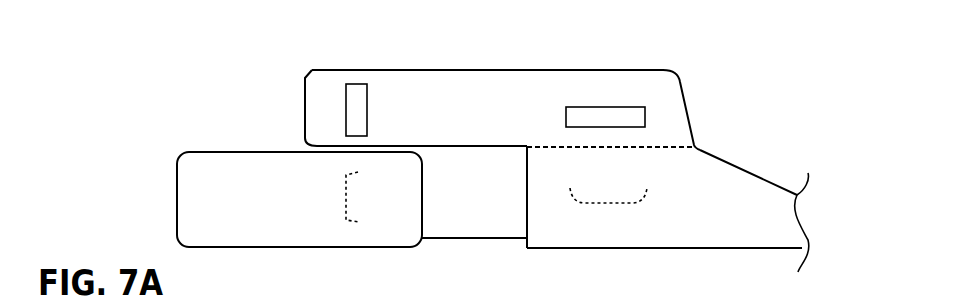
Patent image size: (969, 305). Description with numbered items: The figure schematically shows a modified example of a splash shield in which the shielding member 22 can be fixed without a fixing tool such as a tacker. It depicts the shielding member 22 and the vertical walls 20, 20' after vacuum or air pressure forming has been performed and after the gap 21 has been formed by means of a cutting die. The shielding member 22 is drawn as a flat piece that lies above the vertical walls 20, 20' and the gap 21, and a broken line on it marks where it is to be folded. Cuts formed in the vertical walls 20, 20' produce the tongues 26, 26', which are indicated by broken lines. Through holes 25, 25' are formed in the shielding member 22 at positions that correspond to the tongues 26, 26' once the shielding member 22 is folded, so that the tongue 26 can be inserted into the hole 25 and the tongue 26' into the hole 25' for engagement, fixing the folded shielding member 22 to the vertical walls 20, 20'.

The vertical wall 20 is at (286, 174).
The vertical wall 20' is at (668, 189).
The gap 21 is at (477, 202).
The shielding member 22 is at (465, 97).
The through hole 25 is at (339, 79).
The through hole 25' is at (648, 79).
The tongue 26 is at (309, 226).
The tongue 26' is at (627, 237).